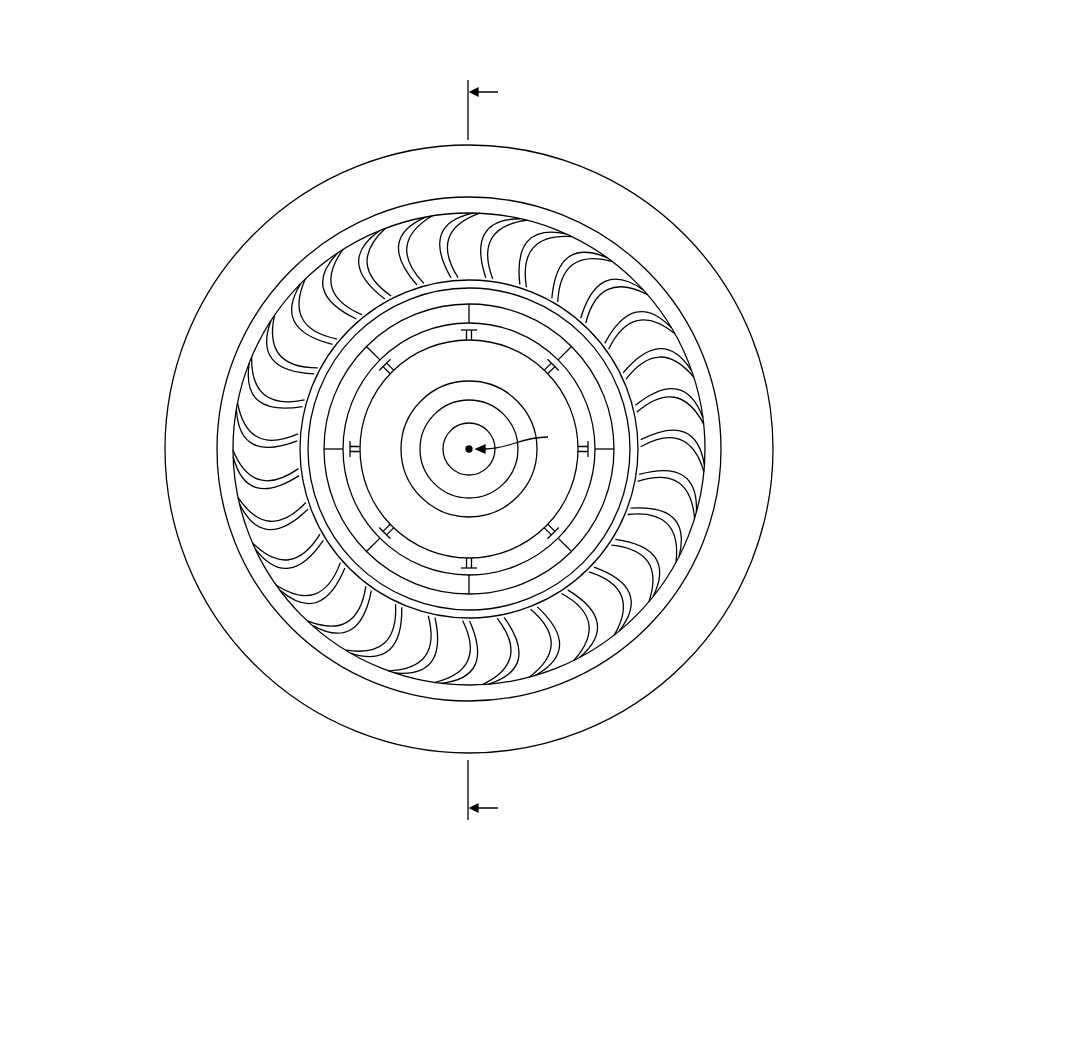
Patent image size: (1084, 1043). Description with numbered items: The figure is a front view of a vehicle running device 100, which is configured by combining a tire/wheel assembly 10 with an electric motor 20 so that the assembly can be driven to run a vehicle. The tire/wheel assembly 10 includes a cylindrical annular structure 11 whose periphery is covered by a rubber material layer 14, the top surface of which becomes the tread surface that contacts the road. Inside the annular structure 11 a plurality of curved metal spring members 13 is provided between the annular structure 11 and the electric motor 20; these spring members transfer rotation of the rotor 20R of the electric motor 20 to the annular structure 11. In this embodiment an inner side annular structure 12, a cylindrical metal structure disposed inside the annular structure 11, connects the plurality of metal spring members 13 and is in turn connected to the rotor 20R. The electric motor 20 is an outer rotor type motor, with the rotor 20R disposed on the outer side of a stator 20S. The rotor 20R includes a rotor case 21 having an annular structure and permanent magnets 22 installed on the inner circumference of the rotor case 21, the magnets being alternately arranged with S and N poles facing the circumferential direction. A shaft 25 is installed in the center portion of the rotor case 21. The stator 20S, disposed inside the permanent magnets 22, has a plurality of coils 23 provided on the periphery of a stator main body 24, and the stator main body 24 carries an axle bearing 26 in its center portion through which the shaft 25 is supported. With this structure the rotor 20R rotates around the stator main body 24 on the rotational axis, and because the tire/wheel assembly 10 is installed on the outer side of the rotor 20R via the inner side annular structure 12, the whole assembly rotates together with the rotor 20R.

The vehicle running device 100 is at (627, 60).
The tire/wheel assembly 10 is at (842, 431).
The annular structure 11 is at (712, 465).
The inner side annular structure 12 is at (623, 397).
The metal spring members 13 is at (668, 430).
The rubber material layer 14 is at (748, 500).
The electric motor 20 is at (284, 754).
The rotor 20R is at (440, 797).
The stator 20S is at (216, 730).
The rotor case 21 is at (442, 597).
The permanent magnets 22 is at (402, 568).
The coils 23 is at (418, 533).
The stator main body 24 is at (440, 600).
The shaft 25 is at (452, 443).
The axle bearing 26 is at (423, 461).